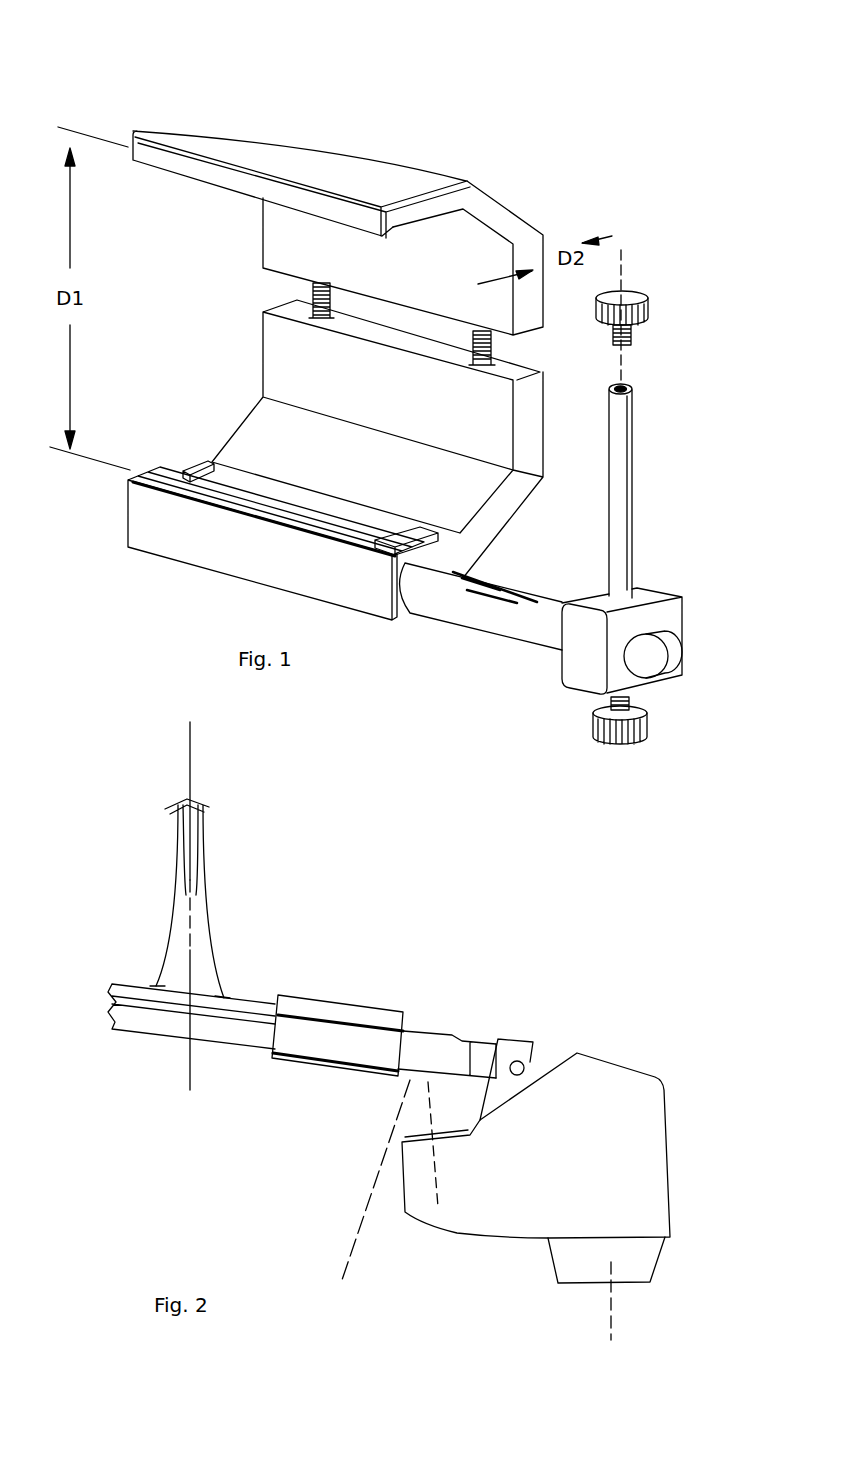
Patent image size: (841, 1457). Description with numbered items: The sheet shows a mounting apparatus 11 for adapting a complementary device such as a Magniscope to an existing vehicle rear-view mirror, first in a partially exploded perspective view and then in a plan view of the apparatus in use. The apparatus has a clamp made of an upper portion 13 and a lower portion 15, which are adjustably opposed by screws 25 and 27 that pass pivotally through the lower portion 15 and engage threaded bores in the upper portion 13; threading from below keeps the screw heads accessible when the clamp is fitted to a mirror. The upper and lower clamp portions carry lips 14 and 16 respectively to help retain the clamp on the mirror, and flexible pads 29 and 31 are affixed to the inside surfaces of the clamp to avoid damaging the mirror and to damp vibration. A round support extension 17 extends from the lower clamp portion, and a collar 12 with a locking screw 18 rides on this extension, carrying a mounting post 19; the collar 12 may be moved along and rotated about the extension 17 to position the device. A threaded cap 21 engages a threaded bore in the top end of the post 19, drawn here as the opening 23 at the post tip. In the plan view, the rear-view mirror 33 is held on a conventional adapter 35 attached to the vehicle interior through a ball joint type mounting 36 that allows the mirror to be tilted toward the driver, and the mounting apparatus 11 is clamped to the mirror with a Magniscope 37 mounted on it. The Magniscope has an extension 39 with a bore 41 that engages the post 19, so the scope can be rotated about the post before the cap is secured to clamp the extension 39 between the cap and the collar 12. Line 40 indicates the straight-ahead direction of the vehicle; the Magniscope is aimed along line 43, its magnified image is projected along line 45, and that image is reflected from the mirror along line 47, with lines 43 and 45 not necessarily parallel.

In FIG. 1, the mounting apparatus 11 is at (382, 72).
In FIG. 2, the mounting apparatus 11 is at (349, 988).
In FIG. 1, the collar 12 is at (572, 662).
In FIG. 1, the upper portion 13 is at (218, 124).
In FIG. 1, the lip 14 is at (393, 229).
In FIG. 1, the lower portion 15 is at (270, 330).
In FIG. 1, the lip 16 is at (260, 512).
In FIG. 1, the support extension 17 is at (440, 613).
In FIG. 2, the support extension 17 is at (478, 1030).
In FIG. 1, the locking screw 18 is at (647, 725).
In FIG. 1, the mounting post 19 is at (627, 467).
In FIG. 2, the mounting post 19 is at (512, 1058).
In FIG. 1, the threaded cap 21 is at (635, 292).
In FIG. 1, the post end bore 23 is at (625, 385).
In FIG. 1, the screw 25 is at (313, 301).
In FIG. 1, the screw 27 is at (493, 350).
In FIG. 1, the flexible pad 29 is at (188, 468).
In FIG. 1, the flexible pad 31 is at (421, 527).
In FIG. 2, the rear-view mirror 33 is at (150, 1042).
In FIG. 2, the conventional adapter 35 is at (207, 931).
In FIG. 2, the ball joint type mounting 36 is at (223, 999).
In FIG. 2, the Magniscope 37 is at (623, 1068).
In FIG. 2, the extension 39 is at (540, 1067).
In FIG. 2, the line 40 is at (188, 763).
In FIG. 2, the bore 41 is at (517, 1076).
In FIG. 2, the line 43 is at (611, 1318).
In FIG. 2, the line 45 is at (437, 1180).
In FIG. 2, the line 47 is at (353, 1245).